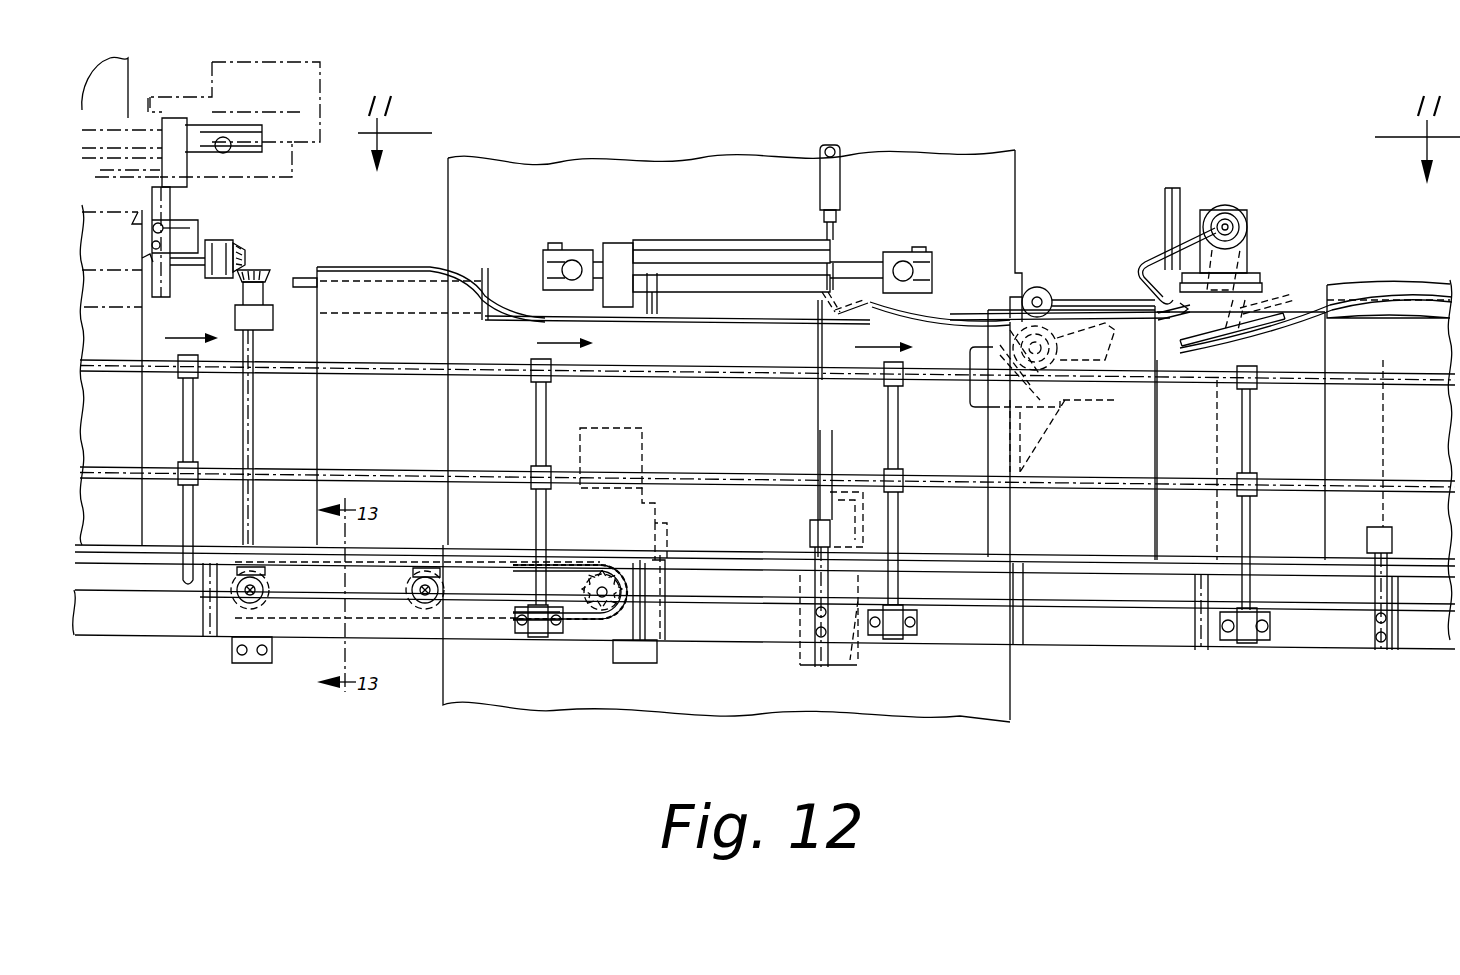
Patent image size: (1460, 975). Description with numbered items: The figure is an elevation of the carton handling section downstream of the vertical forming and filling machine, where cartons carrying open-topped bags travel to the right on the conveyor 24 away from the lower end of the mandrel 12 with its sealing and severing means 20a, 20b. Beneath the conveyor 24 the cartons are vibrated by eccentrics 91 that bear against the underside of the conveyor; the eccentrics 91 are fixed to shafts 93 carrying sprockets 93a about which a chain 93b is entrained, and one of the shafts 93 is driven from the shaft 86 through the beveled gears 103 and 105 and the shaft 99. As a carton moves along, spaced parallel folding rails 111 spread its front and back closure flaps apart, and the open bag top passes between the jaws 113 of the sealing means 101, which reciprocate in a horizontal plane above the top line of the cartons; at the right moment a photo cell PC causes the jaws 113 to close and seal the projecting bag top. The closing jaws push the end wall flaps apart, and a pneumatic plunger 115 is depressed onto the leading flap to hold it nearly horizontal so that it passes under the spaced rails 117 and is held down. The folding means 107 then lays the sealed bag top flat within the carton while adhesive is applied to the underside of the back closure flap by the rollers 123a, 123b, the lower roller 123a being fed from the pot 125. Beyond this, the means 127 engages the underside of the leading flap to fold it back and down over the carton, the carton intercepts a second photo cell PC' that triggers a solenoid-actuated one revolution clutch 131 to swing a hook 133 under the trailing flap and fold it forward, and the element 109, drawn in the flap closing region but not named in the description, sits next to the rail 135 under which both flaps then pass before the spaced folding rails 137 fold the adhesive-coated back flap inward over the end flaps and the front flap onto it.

The hollow forming and filling mandrel 12 is at (127, 70).
The sealing and severing means 20a is at (231, 113).
The sealing and severing means 20b is at (142, 92).
The shaft 86 is at (182, 263).
The beveled gear 105 is at (235, 246).
The beveled gear 103 is at (265, 275).
The folding rails 111 is at (305, 288).
The shaft 99 is at (252, 435).
The eccentrics 91 is at (237, 590).
The sprockets 93a is at (270, 585).
The shafts 93 is at (245, 596).
The chain 93b is at (580, 563).
The jaws 113 is at (685, 255).
The pneumatic plunger 115 is at (826, 237).
The sealing means 101 is at (858, 235).
The rails 117 is at (918, 309).
The roller 123b is at (1040, 287).
The folding means 107 is at (1087, 306).
The roller 123a is at (1113, 358).
The pot 125 is at (1066, 412).
The flap folding means 127 is at (1250, 358).
The one revolution clutch 131 is at (1228, 207).
The hook 133 is at (1143, 264).
The pusher 109 is at (1277, 292).
The rail 135 is at (1313, 322).
The folding rails 137 is at (1397, 297).
The conveyor 24 is at (1310, 582).
The photo cell PC is at (816, 548).
The photo cell PC' is at (1397, 577).